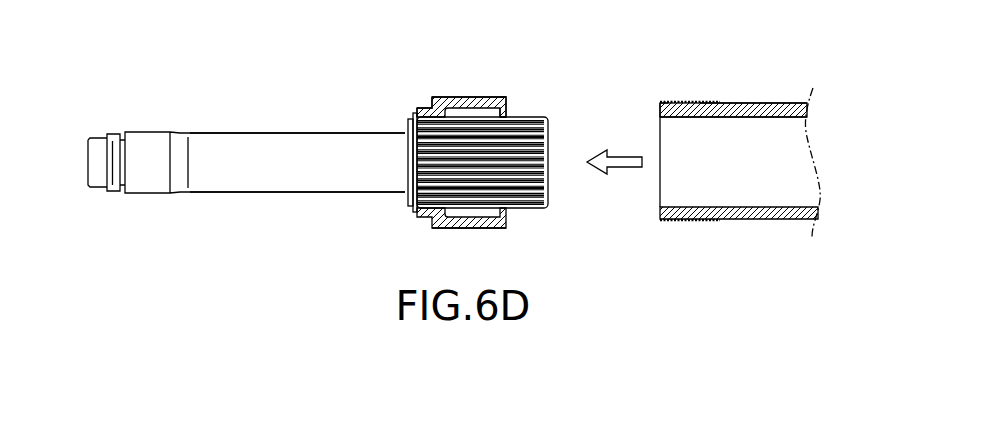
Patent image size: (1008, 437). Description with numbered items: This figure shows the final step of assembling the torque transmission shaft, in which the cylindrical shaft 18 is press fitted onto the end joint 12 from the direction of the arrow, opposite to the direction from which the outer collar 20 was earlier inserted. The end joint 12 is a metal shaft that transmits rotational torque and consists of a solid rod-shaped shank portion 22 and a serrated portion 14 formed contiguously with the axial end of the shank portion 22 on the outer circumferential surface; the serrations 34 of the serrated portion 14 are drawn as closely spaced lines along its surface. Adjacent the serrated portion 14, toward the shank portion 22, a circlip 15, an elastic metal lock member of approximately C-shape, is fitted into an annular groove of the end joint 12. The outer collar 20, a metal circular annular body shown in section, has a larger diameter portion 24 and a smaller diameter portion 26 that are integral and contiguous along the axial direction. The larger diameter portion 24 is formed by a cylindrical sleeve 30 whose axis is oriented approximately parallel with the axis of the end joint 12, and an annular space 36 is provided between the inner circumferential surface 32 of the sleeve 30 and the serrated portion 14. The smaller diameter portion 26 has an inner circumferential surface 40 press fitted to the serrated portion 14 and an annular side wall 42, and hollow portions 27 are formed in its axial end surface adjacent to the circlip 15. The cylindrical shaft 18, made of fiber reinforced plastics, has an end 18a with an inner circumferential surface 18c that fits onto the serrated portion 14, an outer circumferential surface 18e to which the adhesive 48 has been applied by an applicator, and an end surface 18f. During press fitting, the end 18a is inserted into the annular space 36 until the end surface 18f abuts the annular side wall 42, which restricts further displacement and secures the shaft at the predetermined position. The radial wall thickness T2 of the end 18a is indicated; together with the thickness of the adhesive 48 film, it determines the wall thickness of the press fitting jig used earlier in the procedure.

The end joint 12 is at (224, 131).
The shank portion 22 is at (278, 153).
The serrated portion 14 is at (537, 133).
The circlip 15 is at (413, 113).
The outer collar 20 is at (475, 96).
The larger diameter portion 24 is at (494, 98).
The smaller diameter portion 26 is at (421, 108).
The hollow portions 27 is at (417, 107).
The sleeve 30 is at (497, 229).
The inner circumferential surface 32 is at (501, 110).
The spline teeth 34 is at (538, 180).
The annular space 36 is at (508, 112).
The inner circumferential surface 40 is at (409, 121).
The annular side wall 42 is at (468, 96).
The cylindrical shaft 18 is at (800, 101).
The end 18a is at (660, 105).
The inner circumferential surface 18c is at (687, 118).
The outer circumferential surface 18e is at (767, 103).
The end surface 18f is at (660, 110).
The adhesive 48 is at (693, 102).
The radial wall thickness T2 is at (742, 147).